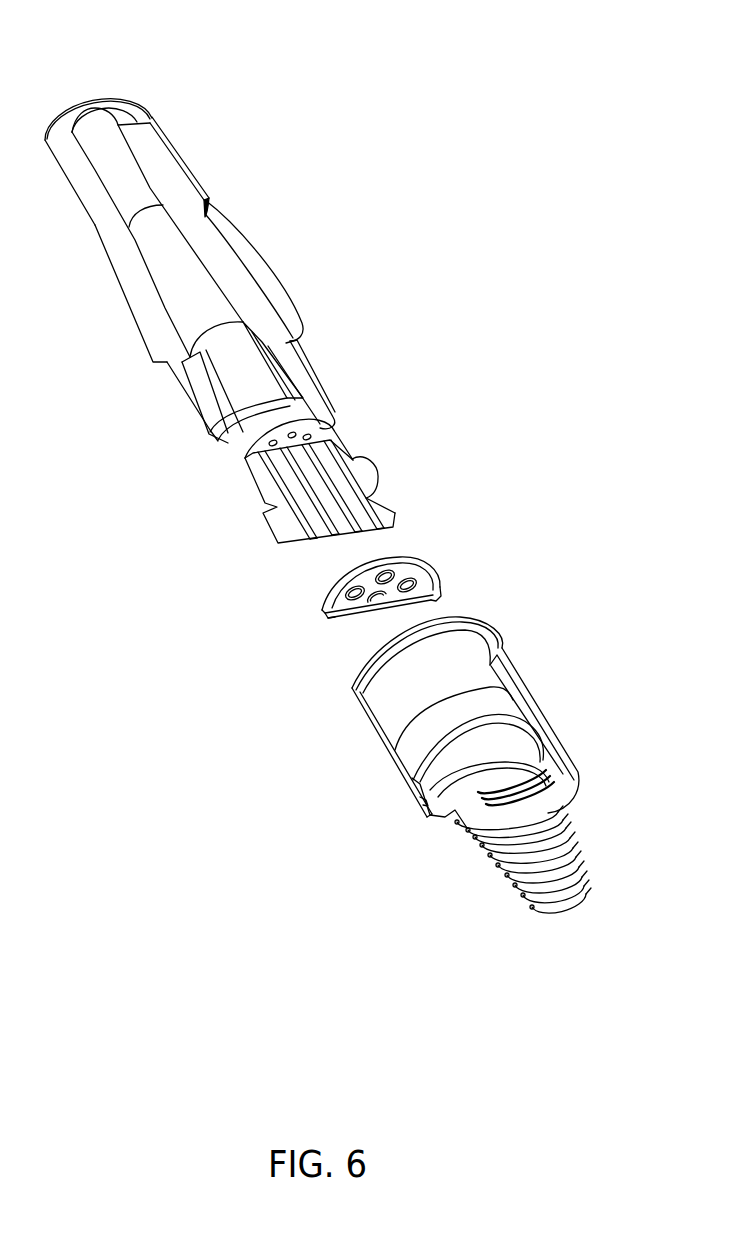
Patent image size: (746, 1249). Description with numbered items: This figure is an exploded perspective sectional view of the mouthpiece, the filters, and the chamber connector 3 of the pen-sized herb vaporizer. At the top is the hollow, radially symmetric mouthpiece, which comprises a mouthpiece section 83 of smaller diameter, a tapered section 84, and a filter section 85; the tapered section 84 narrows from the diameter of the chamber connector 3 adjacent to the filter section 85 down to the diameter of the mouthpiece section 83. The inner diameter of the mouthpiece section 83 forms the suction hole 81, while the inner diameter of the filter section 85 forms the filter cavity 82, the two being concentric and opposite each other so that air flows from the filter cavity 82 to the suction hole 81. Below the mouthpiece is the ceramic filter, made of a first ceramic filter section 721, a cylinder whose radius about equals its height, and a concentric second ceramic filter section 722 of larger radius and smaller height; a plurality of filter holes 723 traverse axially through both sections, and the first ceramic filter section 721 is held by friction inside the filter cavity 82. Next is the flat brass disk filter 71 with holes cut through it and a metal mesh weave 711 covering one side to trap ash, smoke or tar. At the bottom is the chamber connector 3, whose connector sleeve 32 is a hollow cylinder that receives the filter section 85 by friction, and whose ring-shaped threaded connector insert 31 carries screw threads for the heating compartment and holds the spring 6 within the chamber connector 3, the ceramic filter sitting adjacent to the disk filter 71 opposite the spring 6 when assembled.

The chamber connector 3 is at (540, 672).
The spring 6 is at (577, 850).
The threaded connector insert 31 is at (445, 817).
The connector sleeve 32 is at (385, 718).
The disk filter 71 is at (319, 618).
The metal mesh weave 711 is at (378, 602).
The suction hole 81 is at (92, 121).
The filter cavity 82 is at (210, 433).
The mouthpiece section 83 is at (185, 163).
The tapered section 84 is at (275, 281).
The filter section 85 is at (312, 365).
The first ceramic filter section 721 is at (340, 448).
The second ceramic filter section 722 is at (383, 495).
The filter holes 723 is at (277, 473).